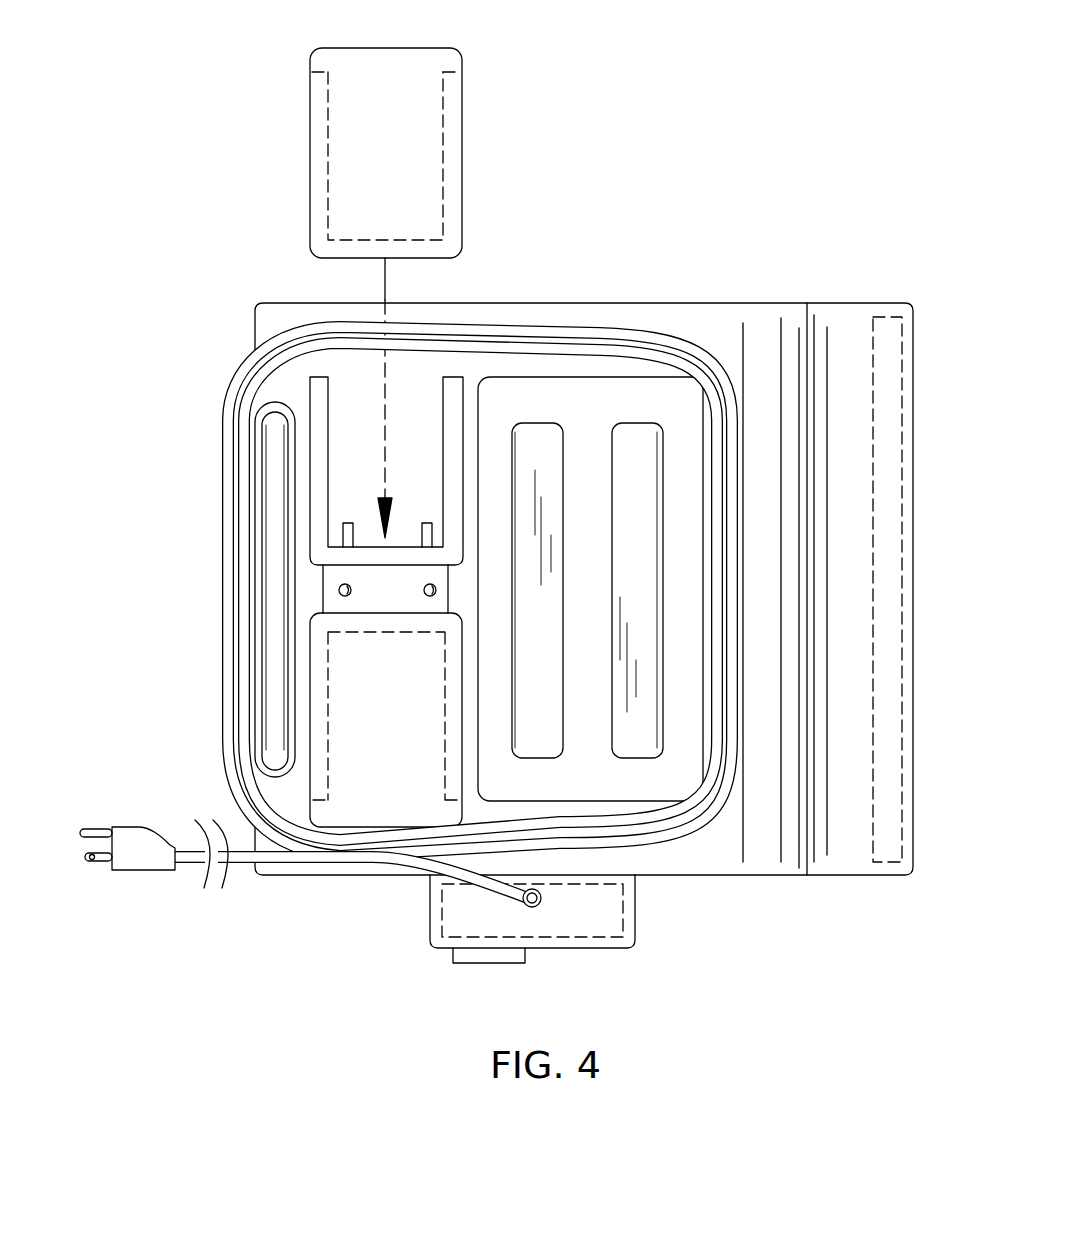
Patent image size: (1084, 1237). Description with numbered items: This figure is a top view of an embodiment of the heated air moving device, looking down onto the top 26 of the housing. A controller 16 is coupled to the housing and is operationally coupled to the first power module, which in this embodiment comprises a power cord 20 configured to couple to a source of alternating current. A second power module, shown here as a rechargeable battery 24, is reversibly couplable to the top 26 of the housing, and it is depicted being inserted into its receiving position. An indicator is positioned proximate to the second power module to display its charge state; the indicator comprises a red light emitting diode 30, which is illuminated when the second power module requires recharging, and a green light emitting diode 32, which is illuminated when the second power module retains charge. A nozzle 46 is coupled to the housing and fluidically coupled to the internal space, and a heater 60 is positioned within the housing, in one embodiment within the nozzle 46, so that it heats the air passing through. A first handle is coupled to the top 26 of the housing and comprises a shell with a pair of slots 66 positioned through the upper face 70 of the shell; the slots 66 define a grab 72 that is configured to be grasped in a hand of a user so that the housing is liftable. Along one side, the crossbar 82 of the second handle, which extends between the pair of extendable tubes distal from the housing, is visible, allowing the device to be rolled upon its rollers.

The controller 16 is at (597, 927).
The power cord 20 is at (190, 860).
The rechargeable battery 24 is at (422, 75).
The top 26 is at (530, 313).
The red light emitting diode 30 is at (338, 590).
The green light emitting diode 32 is at (427, 596).
The nozzle 46 is at (837, 318).
The heater 60 is at (885, 335).
The slots 66 is at (628, 441).
The upper face 70 is at (657, 397).
The grab 72 is at (585, 632).
The crossbar 82 is at (275, 647).